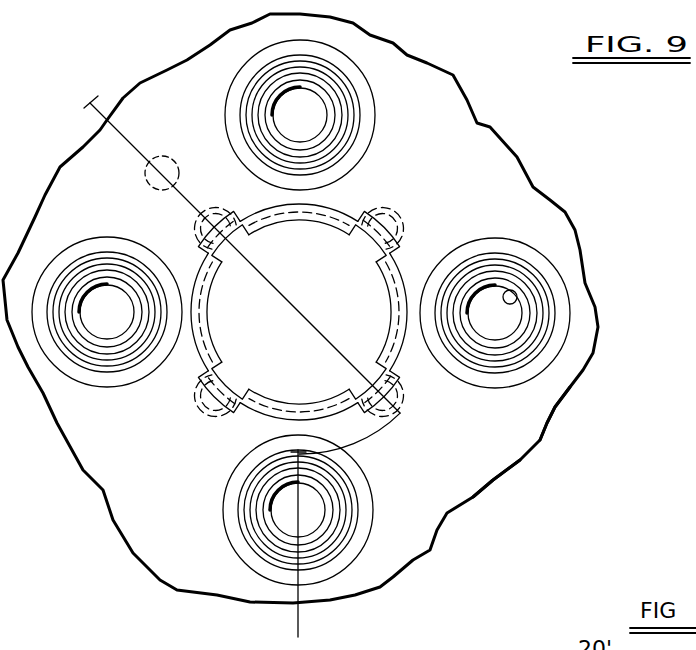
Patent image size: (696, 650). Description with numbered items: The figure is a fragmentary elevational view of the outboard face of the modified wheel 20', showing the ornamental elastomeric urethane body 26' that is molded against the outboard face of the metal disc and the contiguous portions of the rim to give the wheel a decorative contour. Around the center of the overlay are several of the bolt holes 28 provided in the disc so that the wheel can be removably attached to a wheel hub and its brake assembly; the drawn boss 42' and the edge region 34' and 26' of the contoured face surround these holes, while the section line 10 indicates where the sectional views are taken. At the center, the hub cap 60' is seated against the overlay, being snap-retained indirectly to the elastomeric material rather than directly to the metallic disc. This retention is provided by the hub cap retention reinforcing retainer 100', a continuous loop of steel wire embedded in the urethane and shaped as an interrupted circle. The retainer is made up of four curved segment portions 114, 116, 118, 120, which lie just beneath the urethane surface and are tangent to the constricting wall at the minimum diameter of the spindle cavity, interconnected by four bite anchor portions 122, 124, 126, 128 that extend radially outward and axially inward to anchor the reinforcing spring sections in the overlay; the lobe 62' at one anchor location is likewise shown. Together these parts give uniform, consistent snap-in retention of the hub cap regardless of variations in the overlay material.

The section line 10- 10 is at (135, 68).
The wheel 20' is at (300, 308).
The ornamental elastomeric urethane body 26' is at (583, 413).
The bolt holes 28 is at (510, 292).
The peripheral edge portion 34' is at (513, 485).
The mounting boss 42' is at (535, 313).
The hub cap 60' is at (299, 295).
The channel lobe 62' is at (401, 387).
The hub cap retention reinforcing retainer 100' is at (431, 226).
The curved segment portion 114 is at (283, 224).
The curved segment portion 116 is at (393, 300).
The curved segment portion 118 is at (292, 400).
The curved segment portion 120 is at (206, 325).
The bite anchor portion 122 is at (396, 212).
The bite anchor portion 124 is at (405, 433).
The bite anchor portion 126 is at (212, 418).
The bite anchor portion 128 is at (205, 238).